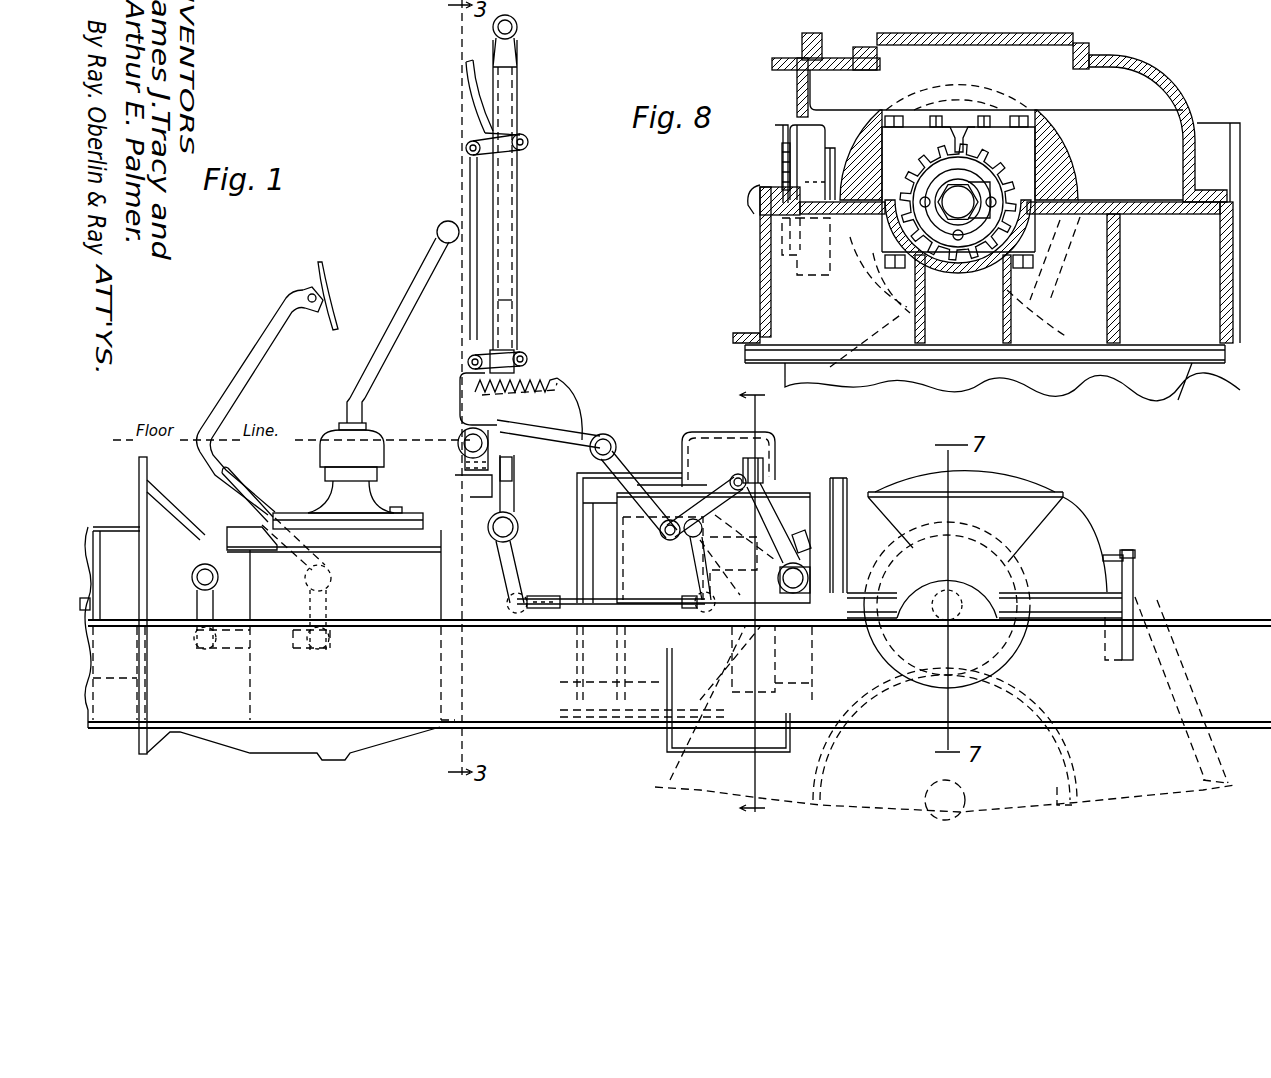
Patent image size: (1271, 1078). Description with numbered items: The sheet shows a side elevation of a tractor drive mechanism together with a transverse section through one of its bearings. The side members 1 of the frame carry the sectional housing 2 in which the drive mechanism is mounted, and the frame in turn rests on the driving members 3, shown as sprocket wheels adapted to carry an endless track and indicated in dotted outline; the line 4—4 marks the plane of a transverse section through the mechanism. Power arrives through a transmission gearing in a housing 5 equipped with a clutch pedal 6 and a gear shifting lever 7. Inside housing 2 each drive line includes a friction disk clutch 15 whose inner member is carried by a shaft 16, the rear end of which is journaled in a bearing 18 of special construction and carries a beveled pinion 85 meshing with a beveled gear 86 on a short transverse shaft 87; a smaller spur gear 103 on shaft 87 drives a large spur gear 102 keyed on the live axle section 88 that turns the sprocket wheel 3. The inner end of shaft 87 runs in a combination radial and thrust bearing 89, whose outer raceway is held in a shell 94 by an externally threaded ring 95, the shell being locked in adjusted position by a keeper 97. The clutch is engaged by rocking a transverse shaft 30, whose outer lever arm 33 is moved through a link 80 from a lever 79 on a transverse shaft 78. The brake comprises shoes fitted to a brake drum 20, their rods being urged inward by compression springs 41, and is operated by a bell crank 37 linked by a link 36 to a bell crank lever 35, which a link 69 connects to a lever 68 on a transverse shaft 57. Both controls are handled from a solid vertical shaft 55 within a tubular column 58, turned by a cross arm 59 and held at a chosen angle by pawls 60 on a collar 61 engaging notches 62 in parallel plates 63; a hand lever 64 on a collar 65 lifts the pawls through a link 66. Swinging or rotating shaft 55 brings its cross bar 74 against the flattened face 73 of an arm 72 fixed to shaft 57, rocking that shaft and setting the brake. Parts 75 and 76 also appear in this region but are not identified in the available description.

In FIG. 1, the side members of the frame 1 is at (1213, 621).
In FIG. 8, the sectional housing 2 is at (1165, 92).
In FIG. 1, the sectional housing 2 is at (853, 497).
In FIG. 1, the driving members 3 is at (1232, 760).
In FIG. 1, the section line 4— 4 is at (740, 602).
In FIG. 1, the housing 5 is at (139, 495).
In FIG. 1, the clutch pedal 6 is at (245, 355).
In FIG. 1, the gear shifting lever 7 is at (366, 361).
In FIG. 1, the clutch 15 is at (657, 683).
In FIG. 8, the shaft 16 is at (755, 217).
In FIG. 8, the bearing 18 is at (818, 276).
In FIG. 1, the brake drum 20 is at (812, 683).
In FIG. 1, the transverse shaft 30 is at (790, 596).
In FIG. 1, the lever arm 33 is at (765, 515).
In FIG. 1, the bell crank lever 35 is at (688, 556).
In FIG. 1, the link 36 is at (762, 480).
In FIG. 1, the bell crank 37 is at (752, 462).
In FIG. 1, the compression springs 41 is at (802, 538).
In FIG. 1, the solid vertical shaft 55 is at (517, 312).
In FIG. 1, the transverse shaft 57 is at (490, 522).
In FIG. 1, the outer tubular shaft or column 58 is at (513, 210).
In FIG. 1, the cross arm 59 is at (518, 25).
In FIG. 1, the pawls 60 is at (460, 369).
In FIG. 1, the collar 61 is at (512, 355).
In FIG. 1, the notches 62 is at (538, 382).
In FIG. 1, the parallel plates 63 is at (577, 400).
In FIG. 1, the hand lever 64 is at (478, 105).
In FIG. 1, the collar 65 is at (514, 150).
In FIG. 1, the link 66 is at (470, 194).
In FIG. 1, the lever 68 is at (516, 570).
In FIG. 1, the link 69 is at (530, 608).
In FIG. 1, the arm 72 is at (490, 481).
In FIG. 1, the flattened face 73 is at (513, 467).
In FIG. 1, the cross bar 74 is at (464, 465).
In FIG. 1, the roller 75 is at (460, 440).
In FIG. 1, the link 76 is at (576, 425).
In FIG. 1, the transverse shaft 78 is at (618, 450).
In FIG. 1, the lever 79 is at (660, 485).
In FIG. 1, the link 80 is at (712, 503).
In FIG. 8, the beveled pinion 85 is at (853, 150).
In FIG. 8, the beveled gear 86 is at (1070, 178).
In FIG. 8, the short transverse shaft 87 is at (1015, 240).
In FIG. 1, the short transverse shaft 87 is at (936, 601).
In FIG. 1, the live axle section 88 is at (928, 792).
In FIG. 8, the combination radial and thrust bearing 89 is at (926, 150).
In FIG. 8, the shell 94 is at (1000, 172).
In FIG. 8, the externally threaded ring 95 is at (985, 188).
In FIG. 8, the keeper 97 is at (965, 138).
In FIG. 8, the large spur gear 102 is at (1106, 374).
In FIG. 1, the large spur gear 102 is at (1072, 764).
In FIG. 8, the smaller spur gear 103 is at (1022, 292).
In FIG. 1, the smaller spur gear 103 is at (1012, 640).